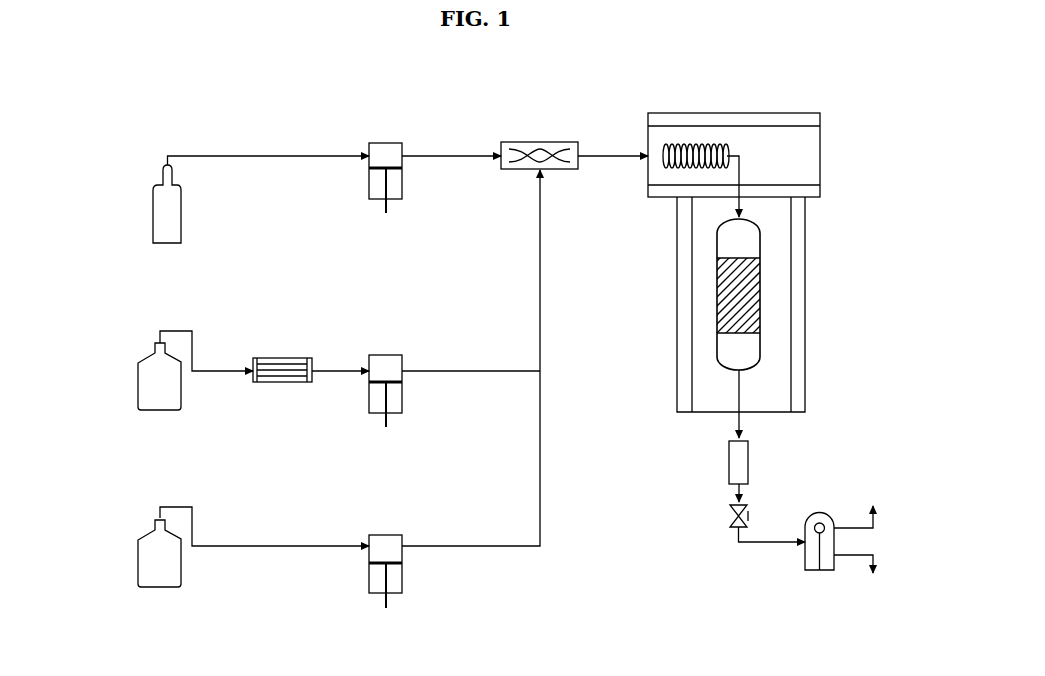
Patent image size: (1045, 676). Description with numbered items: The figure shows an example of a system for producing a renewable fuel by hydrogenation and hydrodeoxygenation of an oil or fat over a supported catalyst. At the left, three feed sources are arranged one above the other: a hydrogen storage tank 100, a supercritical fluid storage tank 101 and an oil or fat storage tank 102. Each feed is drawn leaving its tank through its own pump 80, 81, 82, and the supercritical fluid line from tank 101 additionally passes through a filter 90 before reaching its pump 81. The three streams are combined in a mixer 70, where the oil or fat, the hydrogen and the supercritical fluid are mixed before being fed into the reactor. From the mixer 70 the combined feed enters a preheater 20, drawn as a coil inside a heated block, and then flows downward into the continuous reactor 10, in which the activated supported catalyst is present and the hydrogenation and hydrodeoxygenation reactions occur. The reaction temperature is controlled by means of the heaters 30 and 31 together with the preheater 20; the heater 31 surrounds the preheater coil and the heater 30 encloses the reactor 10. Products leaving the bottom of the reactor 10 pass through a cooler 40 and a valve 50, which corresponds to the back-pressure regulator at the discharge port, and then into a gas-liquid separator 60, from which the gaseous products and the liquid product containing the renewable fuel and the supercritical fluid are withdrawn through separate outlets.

The continuous reactor 10 is at (761, 315).
The preheater 20 is at (672, 169).
The heater 30 is at (808, 265).
The heater 31 is at (748, 112).
The cooler 40 is at (749, 462).
The back pressure valve 50 is at (749, 515).
The gas-liquid separator 60 is at (804, 562).
The mixer 70 is at (553, 140).
The pump 80 is at (367, 188).
The pump 81 is at (367, 402).
The pump 82 is at (367, 582).
The filter 90 is at (291, 357).
The hydrogen storage tank 100 is at (150, 213).
The supercritical fluid storage tank 101 is at (137, 385).
The oil or fat storage tank 102 is at (137, 561).